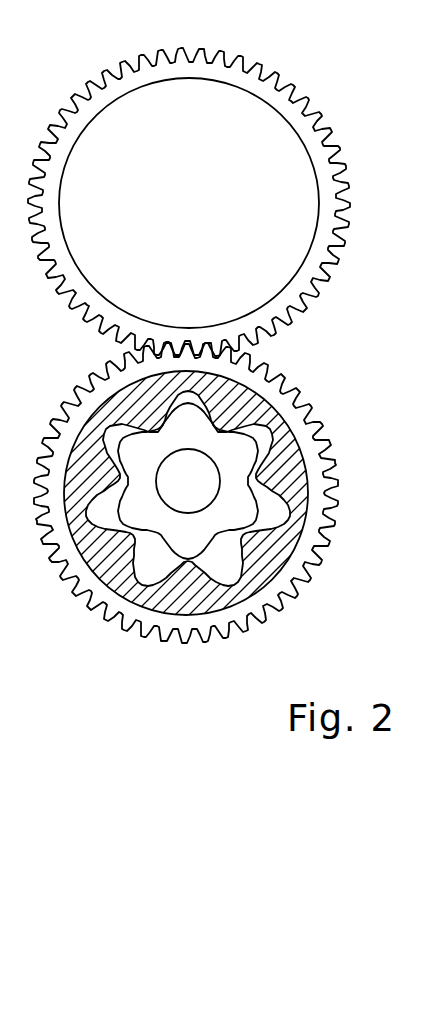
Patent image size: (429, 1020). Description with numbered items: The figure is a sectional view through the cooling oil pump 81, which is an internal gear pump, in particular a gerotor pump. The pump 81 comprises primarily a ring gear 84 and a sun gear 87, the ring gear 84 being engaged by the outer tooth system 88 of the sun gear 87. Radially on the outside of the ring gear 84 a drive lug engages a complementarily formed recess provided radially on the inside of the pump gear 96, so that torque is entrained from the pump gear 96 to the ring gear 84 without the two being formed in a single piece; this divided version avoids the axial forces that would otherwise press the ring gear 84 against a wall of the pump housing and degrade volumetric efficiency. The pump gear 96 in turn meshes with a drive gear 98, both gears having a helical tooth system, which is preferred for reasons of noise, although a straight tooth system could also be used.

The drive gear 98 is at (288, 108).
The pump gear 96 is at (300, 401).
The pump 81 is at (150, 598).
The ring gear 84 is at (100, 558).
The sun gear 87 is at (236, 505).
The outer tooth system 88 is at (200, 540).